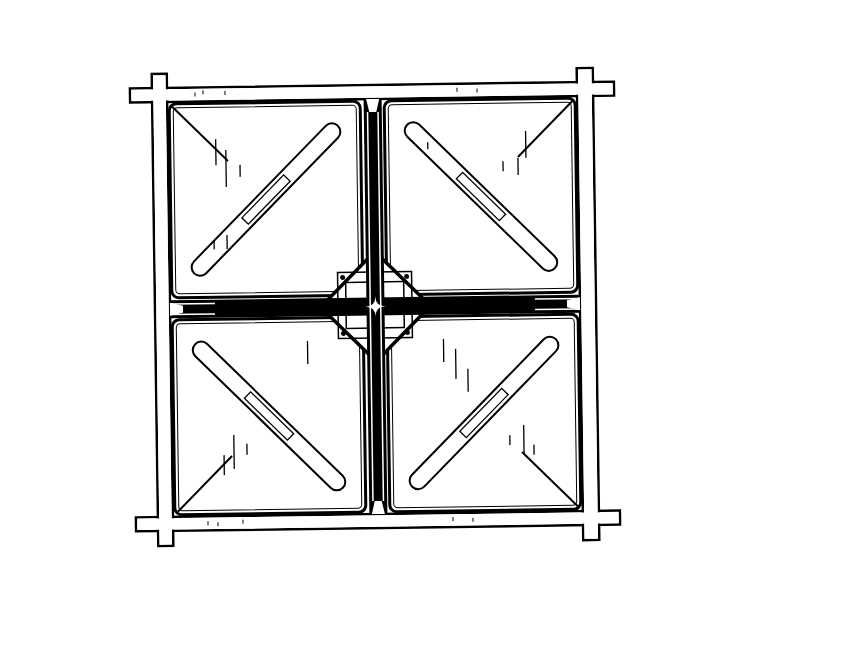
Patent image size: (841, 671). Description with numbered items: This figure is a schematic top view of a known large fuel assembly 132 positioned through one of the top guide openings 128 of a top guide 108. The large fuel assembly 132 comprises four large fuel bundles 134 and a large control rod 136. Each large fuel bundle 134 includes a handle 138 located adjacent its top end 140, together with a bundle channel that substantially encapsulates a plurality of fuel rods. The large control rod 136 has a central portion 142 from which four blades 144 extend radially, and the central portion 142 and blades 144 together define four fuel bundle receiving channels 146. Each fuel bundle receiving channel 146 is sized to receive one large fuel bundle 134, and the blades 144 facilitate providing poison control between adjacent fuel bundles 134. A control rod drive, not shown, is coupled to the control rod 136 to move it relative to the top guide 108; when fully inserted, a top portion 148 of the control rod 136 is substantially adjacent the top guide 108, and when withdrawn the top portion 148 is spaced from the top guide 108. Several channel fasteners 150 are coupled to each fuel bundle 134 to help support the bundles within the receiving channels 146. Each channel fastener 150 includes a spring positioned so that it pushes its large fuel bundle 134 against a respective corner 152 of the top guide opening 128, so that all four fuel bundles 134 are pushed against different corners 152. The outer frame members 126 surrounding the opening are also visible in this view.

The top guide 108 is at (152, 163).
The frame member 126 is at (504, 92).
The top guide opening 128 is at (300, 107).
The large fuel assembly 132 is at (198, 65).
The large fuel bundle 134 is at (193, 183).
The large control rod 136 is at (523, 322).
The handle 138 is at (322, 150).
The top end 140 is at (340, 226).
The central portion 142 is at (388, 297).
The blade 144 is at (227, 298).
The fuel bundle receiving channel 146 is at (197, 222).
The top portion 148 is at (397, 326).
The channel fastener 150 is at (348, 267).
The corner 152 is at (178, 108).